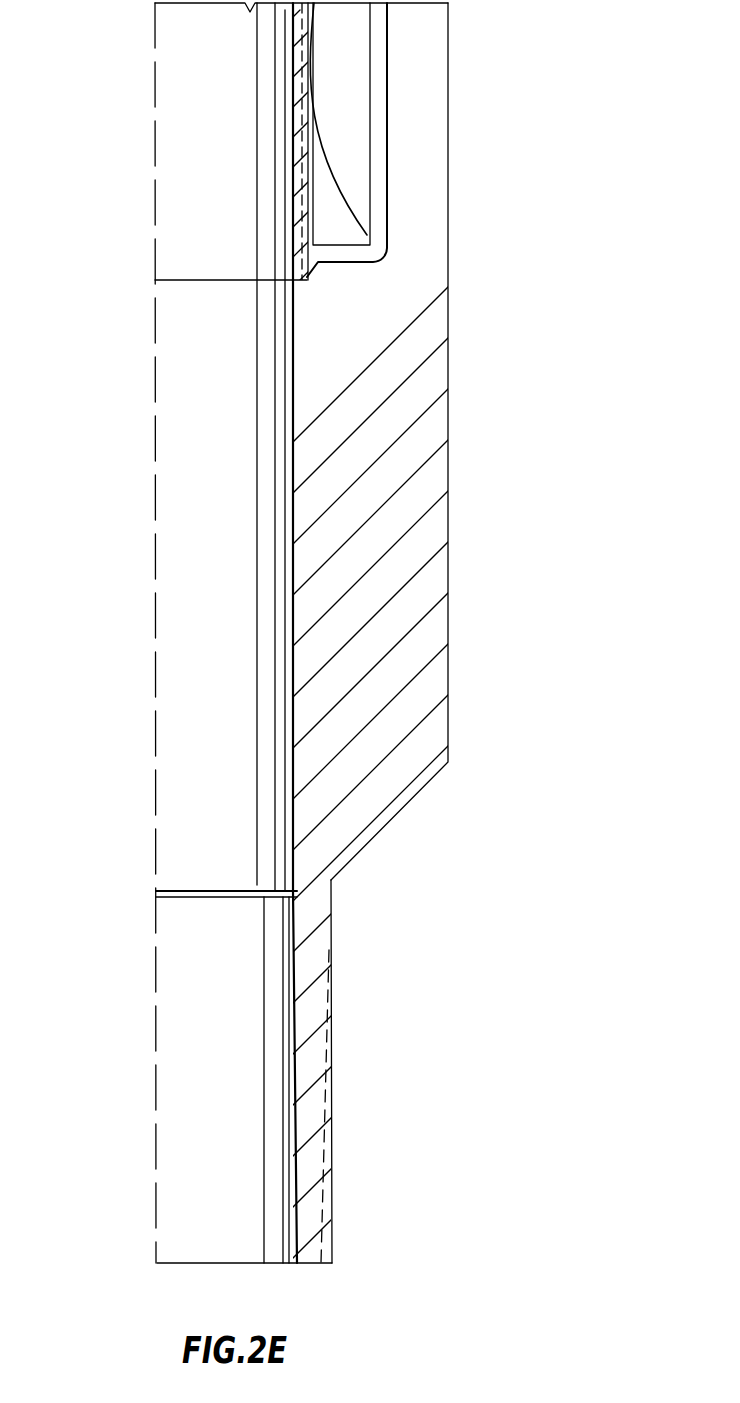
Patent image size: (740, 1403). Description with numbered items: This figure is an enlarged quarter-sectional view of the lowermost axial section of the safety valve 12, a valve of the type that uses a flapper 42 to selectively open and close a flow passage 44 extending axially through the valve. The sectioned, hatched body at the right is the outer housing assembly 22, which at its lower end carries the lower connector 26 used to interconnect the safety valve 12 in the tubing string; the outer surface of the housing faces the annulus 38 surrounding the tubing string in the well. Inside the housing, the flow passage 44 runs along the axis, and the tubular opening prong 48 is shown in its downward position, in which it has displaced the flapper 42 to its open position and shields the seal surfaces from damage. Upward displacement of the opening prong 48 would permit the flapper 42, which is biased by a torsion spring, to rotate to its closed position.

The safety valve 12 is at (603, 72).
The outer housing assembly 22 is at (448, 527).
The lower connector 26 is at (332, 1137).
The annulus 38 is at (492, 355).
The flapper 42 is at (373, 153).
The flow passage 44 is at (190, 712).
The tubular opening prong 48 is at (192, 281).